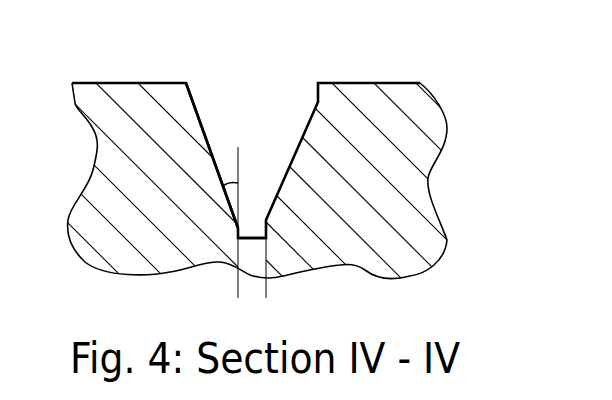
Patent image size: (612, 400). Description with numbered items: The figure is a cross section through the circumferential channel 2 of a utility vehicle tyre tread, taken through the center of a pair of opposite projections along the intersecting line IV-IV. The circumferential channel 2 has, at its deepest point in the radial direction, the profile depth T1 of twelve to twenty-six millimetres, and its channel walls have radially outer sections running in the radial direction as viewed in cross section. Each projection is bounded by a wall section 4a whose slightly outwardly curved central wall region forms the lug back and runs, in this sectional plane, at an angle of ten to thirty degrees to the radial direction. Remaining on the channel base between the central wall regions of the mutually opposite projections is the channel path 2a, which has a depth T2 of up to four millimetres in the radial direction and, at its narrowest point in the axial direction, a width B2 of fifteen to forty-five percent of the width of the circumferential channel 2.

The circumferential channel 2 is at (282, 60).
The channel path 2a is at (254, 212).
The wall section 4a is at (212, 157).
The profile depth T1 is at (356, 92).
The depth of the channel path T2 is at (358, 238).
The width of the channel path B2 is at (205, 287).